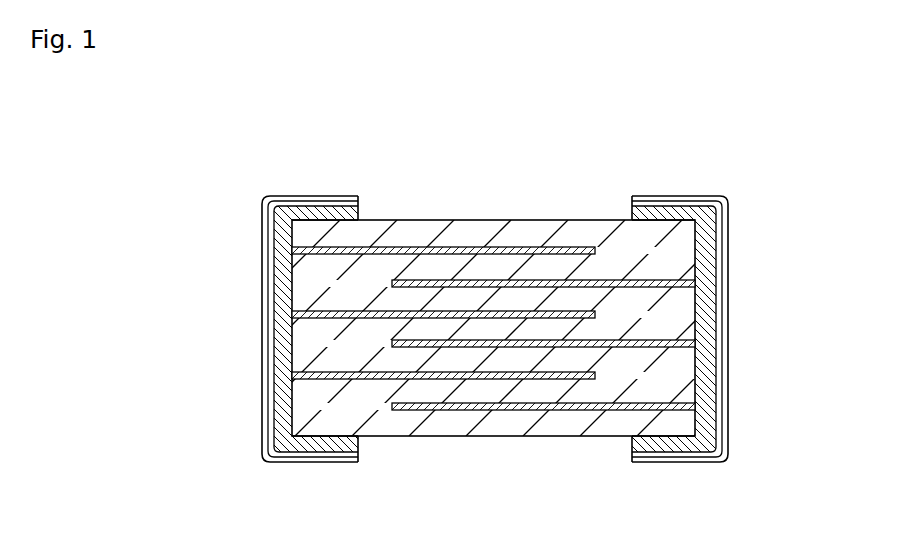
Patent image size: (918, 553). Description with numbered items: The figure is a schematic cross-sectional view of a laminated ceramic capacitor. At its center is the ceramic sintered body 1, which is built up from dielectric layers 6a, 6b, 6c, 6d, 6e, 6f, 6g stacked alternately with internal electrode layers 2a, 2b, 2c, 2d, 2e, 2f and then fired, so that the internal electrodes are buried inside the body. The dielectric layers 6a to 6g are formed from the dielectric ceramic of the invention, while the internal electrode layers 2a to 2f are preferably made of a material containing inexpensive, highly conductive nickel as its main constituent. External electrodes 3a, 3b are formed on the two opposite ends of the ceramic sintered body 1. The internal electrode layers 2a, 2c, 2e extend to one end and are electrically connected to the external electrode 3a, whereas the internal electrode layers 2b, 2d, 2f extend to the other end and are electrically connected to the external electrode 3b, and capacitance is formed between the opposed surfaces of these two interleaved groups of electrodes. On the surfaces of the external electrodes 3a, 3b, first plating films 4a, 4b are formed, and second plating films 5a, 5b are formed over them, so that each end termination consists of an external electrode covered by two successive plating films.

The ceramic sintered body 1 is at (468, 220).
The internal electrode layer 2a is at (596, 251).
The internal electrode layer 2b is at (660, 284).
The internal electrode layer 2c is at (596, 314).
The internal electrode layer 2d is at (660, 344).
The internal electrode layer 2e is at (596, 376).
The internal electrode layer 2f is at (660, 407).
The external electrode 3a is at (315, 339).
The external electrode 3b is at (645, 312).
The first plating film 4a is at (270, 463).
The first plating film 4b is at (725, 445).
The second plating film 5a is at (312, 196).
The second plating film 5b is at (660, 196).
The dielectric layer 6a is at (318, 232).
The dielectric layer 6b is at (322, 266).
The dielectric layer 6c is at (318, 293).
The dielectric layer 6d is at (312, 323).
The dielectric layer 6e is at (318, 355).
The dielectric layer 6f is at (308, 389).
The dielectric layer 6g is at (308, 420).